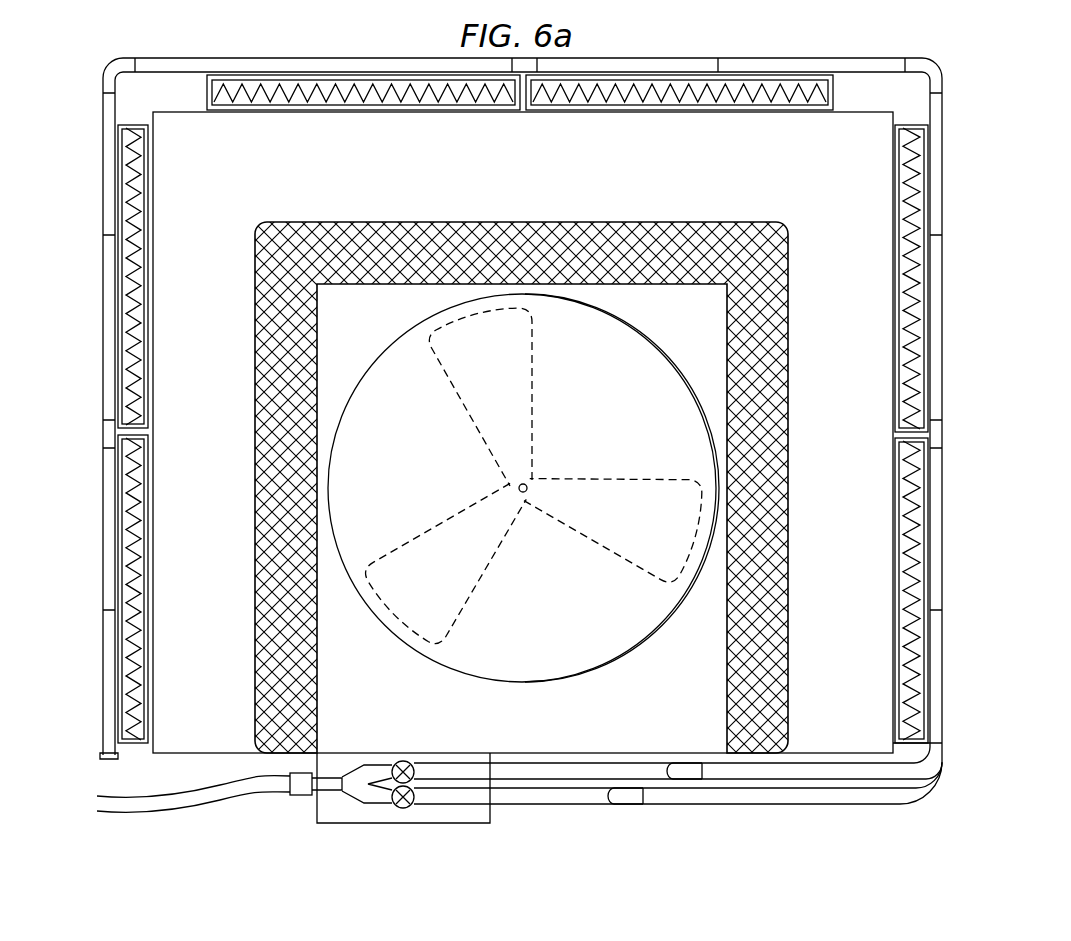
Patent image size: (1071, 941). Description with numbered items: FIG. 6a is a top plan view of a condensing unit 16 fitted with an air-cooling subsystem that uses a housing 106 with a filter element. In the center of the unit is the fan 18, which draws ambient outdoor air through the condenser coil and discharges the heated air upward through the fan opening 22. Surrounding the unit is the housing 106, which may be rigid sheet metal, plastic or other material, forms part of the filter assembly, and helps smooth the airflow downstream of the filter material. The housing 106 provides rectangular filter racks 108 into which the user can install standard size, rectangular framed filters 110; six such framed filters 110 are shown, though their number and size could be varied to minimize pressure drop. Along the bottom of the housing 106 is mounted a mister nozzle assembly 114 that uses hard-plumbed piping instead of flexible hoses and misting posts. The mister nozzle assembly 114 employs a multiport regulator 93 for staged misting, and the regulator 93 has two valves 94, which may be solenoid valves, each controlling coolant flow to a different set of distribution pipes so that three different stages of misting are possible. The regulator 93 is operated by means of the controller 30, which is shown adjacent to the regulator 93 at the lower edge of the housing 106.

The condensing unit 16 is at (651, 224).
The fan 18 is at (470, 418).
The fan opening 22 is at (608, 430).
The controller 30 is at (437, 823).
The multi-port regulator 93 is at (360, 802).
The valves 94 is at (402, 760).
The housing 106 is at (542, 179).
The filter racks 108 is at (895, 433).
The framed filters 110 is at (895, 186).
The mister nozzle assembly 114 is at (803, 804).